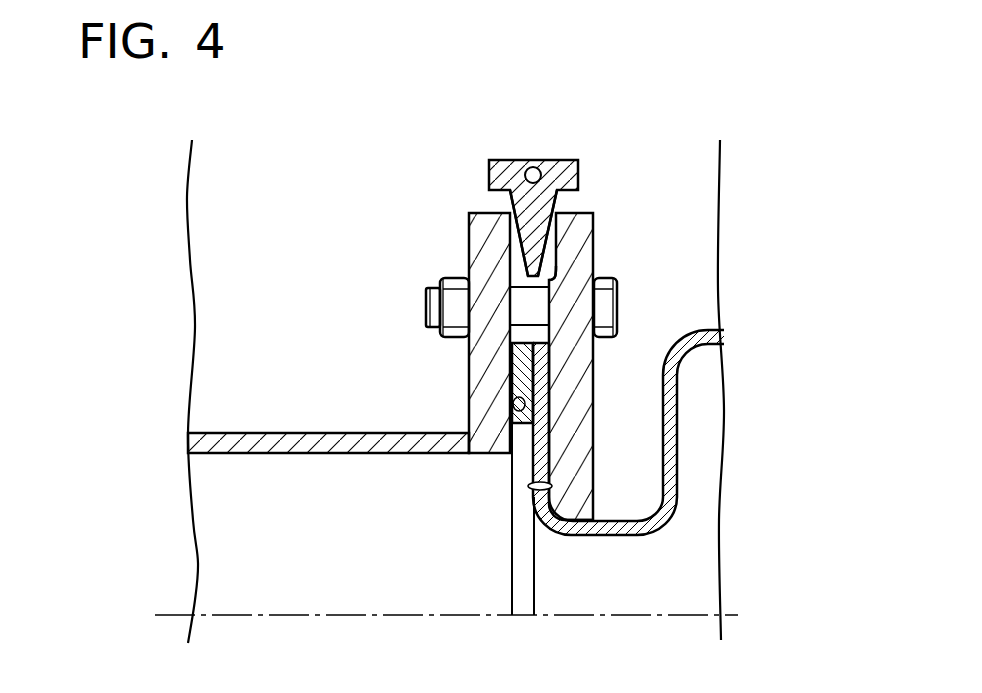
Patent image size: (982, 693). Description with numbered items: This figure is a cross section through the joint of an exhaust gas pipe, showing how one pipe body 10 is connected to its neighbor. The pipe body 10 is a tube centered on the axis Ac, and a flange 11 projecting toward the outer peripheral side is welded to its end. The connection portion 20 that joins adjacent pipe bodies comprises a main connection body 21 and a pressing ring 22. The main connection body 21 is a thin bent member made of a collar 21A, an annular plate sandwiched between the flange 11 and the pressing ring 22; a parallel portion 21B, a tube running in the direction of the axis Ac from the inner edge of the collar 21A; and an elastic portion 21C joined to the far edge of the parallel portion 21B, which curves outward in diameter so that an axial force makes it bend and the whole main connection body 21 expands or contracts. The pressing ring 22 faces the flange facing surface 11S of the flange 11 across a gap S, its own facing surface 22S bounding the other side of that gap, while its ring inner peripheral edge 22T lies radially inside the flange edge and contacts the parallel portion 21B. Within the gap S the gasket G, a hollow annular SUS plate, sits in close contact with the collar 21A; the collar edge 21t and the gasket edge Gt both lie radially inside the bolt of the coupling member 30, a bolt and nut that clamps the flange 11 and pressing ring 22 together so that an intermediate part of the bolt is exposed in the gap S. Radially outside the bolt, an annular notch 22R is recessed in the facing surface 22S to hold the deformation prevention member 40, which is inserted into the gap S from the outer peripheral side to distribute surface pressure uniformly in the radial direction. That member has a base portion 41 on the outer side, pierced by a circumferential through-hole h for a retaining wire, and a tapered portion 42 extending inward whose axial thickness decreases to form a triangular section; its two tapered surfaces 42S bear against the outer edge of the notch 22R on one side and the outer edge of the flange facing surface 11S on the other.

The pipe body 10 is at (255, 444).
The flange 11 is at (480, 238).
The flange facing surface 11S is at (516, 410).
The connection portion 20 is at (608, 442).
The main connection body 21 is at (608, 490).
The collar 21A is at (537, 460).
The parallel portion 21B is at (598, 532).
The elastic portion 21C is at (670, 493).
The collar edge 21t is at (541, 343).
The pressing ring 22 is at (657, 442).
The notch 22R is at (556, 275).
The facing surface 22S is at (553, 487).
The ring inner peripheral edge 22T is at (570, 519).
The coupling member 30 is at (612, 304).
The deformation prevention member 40 is at (506, 182).
The base portion 41 is at (505, 160).
The tapered portion 42 is at (510, 195).
The tapered surface 42S is at (518, 234).
The through-hole h is at (536, 167).
The gap S is at (517, 270).
The gasket G is at (523, 562).
The gasket edge Gt is at (524, 343).
The axis Ac is at (238, 615).